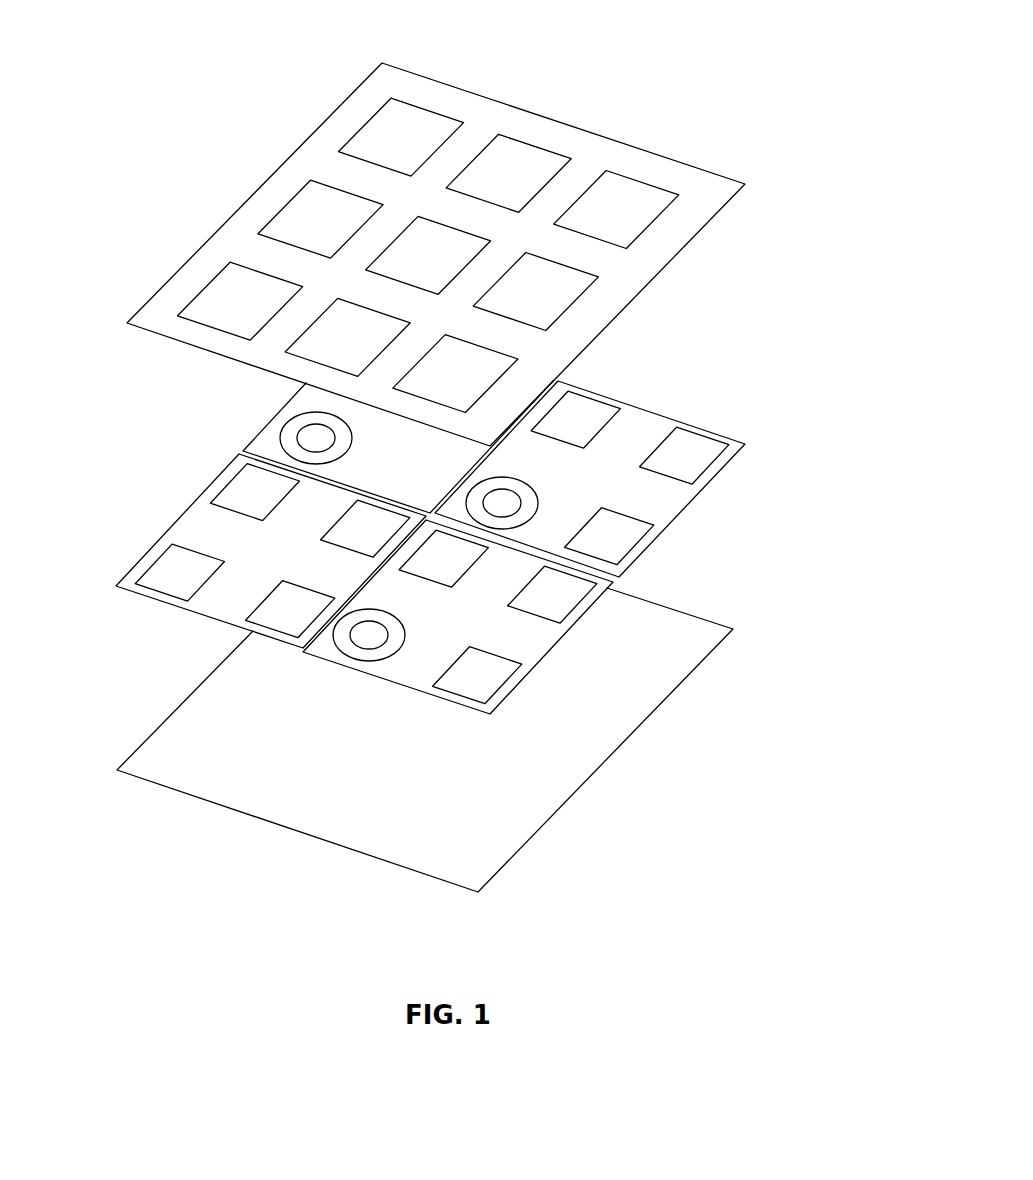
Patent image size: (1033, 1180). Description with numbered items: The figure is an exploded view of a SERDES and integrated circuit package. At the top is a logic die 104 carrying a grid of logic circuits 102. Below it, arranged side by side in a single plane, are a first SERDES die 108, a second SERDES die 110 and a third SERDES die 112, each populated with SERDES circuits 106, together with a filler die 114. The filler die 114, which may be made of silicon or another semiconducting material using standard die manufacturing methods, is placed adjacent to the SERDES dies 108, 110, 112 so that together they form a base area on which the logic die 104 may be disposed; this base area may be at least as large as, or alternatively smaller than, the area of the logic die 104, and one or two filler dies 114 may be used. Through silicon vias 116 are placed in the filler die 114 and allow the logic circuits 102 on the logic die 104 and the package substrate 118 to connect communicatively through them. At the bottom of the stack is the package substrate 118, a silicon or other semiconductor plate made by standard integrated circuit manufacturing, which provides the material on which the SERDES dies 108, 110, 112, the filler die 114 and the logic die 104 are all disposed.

The logic circuits 102 is at (552, 268).
The logic die 104 is at (590, 148).
The SERDES circuits 106 is at (190, 558).
The first SERDES die 108 is at (203, 523).
The second SERDES die 110 is at (520, 648).
The third SERDES die 112 is at (640, 424).
The filler die 114 is at (333, 408).
The through silicon vias 116 is at (292, 430).
The package substrate 118 is at (197, 745).